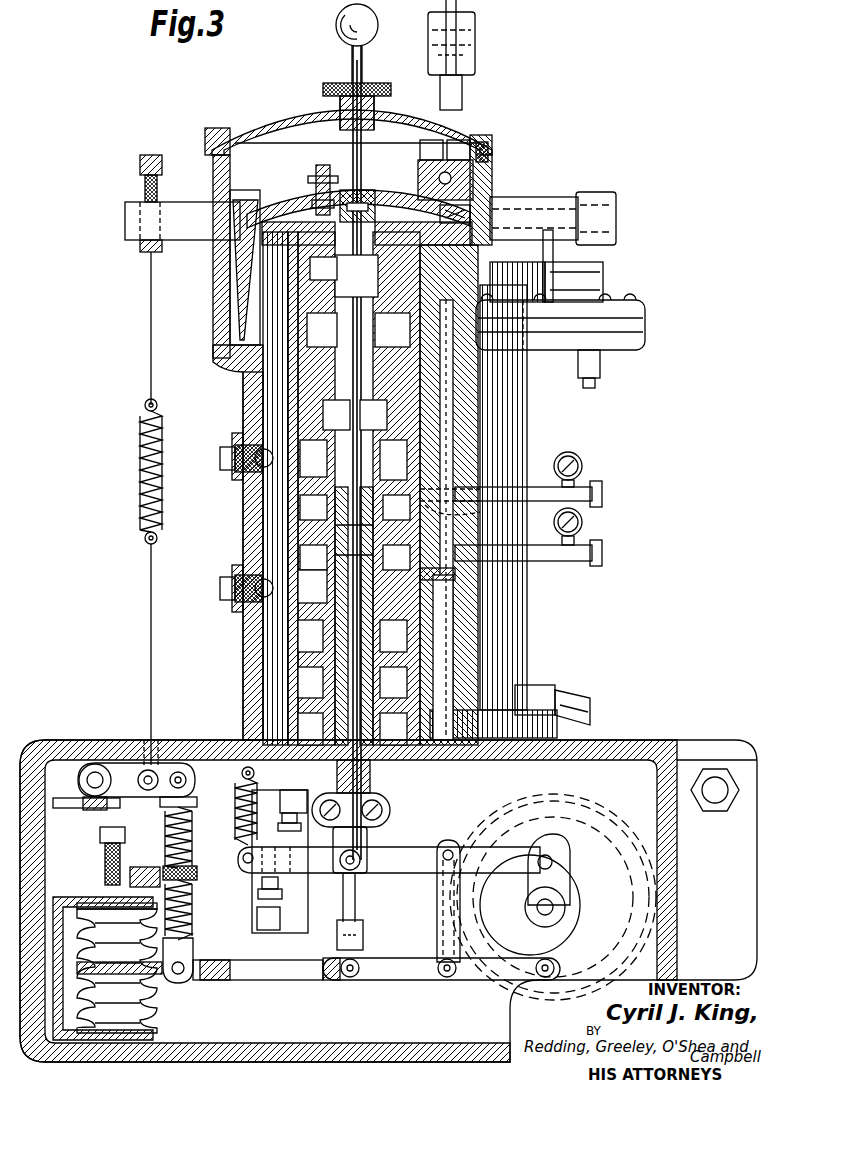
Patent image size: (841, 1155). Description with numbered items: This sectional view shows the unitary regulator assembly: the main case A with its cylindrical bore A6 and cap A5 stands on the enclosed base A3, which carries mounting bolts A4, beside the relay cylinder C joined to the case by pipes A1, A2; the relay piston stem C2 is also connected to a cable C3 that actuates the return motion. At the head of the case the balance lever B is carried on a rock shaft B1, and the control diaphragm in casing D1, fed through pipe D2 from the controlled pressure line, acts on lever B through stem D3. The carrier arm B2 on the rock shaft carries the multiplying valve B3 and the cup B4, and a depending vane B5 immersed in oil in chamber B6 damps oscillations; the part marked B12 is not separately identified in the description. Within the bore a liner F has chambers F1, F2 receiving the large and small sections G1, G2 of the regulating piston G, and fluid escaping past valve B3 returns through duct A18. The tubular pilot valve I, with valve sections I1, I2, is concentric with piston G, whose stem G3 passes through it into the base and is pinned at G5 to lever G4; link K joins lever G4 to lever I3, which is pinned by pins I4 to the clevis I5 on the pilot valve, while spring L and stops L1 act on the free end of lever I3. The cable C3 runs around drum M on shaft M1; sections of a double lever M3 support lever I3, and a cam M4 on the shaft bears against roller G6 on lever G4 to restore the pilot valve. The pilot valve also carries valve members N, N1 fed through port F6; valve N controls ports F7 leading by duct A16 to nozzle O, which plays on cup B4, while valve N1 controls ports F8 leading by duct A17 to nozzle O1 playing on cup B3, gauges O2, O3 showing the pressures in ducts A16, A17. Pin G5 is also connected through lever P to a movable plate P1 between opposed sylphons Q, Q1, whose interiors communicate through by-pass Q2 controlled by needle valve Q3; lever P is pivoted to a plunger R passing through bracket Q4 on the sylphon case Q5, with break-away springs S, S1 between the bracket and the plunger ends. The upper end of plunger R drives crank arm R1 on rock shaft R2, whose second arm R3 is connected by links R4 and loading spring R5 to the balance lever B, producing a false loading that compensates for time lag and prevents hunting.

The main case A is at (246, 675).
The pipe A1 is at (602, 268).
The pipe A2 is at (576, 715).
The enclosed base A3 is at (378, 1062).
The lugs and bolts A4 is at (715, 788).
The cap A5 is at (283, 130).
The cylindrical bore A6 is at (290, 700).
The duct A16 is at (470, 580).
The duct A17 is at (496, 510).
The return duct A18 is at (272, 642).
The balance lever B is at (557, 214).
The rock shaft B1 is at (250, 222).
The carrier arm B2 is at (376, 206).
The multiplying valve B3 is at (318, 175).
The cup B4 is at (372, 212).
The depending vane B5 is at (244, 292).
The chamber B6 is at (230, 326).
The diaphragm B12 is at (300, 200).
The cylinder C is at (516, 422).
The stem C2 is at (460, 108).
The cable C3 is at (453, 652).
The casing D1 is at (614, 338).
The pipe D2 is at (600, 378).
The stem D3 is at (556, 258).
The cylinder liner F is at (302, 416).
The chamber F1 is at (392, 330).
The chamber F2 is at (373, 415).
The port F6 is at (332, 528).
The ports F7 is at (332, 556).
The ports F8 is at (332, 500).
The regulating piston G is at (322, 330).
The upper piston section G1 is at (355, 276).
The lower piston section G2 is at (336, 415).
The stem G3 is at (360, 905).
The lever G4 is at (410, 980).
The pivotal connection G5 is at (350, 980).
The roller G6 is at (528, 988).
The pilot valve I is at (370, 778).
The valve section I1 is at (393, 636).
The valve section I2 is at (393, 729).
The lever I3 is at (418, 858).
The pins I4 is at (345, 862).
The clevis I5 is at (372, 832).
The link K is at (437, 932).
The spring L is at (248, 838).
The stops L1 is at (285, 815).
The drum M is at (612, 826).
The shaft M1 is at (560, 916).
The double lever M3 is at (553, 864).
The cam M4 is at (567, 906).
The valve member N is at (273, 586).
The valve member N1 is at (273, 458).
The nozzle O is at (488, 201).
The nozzle O1 is at (482, 180).
The gauge O2 is at (584, 526).
The gauge O3 is at (584, 470).
The lever P is at (270, 980).
The movable plate P1 is at (140, 986).
The sylphon Q is at (150, 1030).
The sylphon Q1 is at (84, 900).
The by-pass Q2 is at (64, 888).
The needle valve Q3 is at (120, 806).
The bracket Q4 is at (197, 873).
The case Q5 is at (148, 868).
The plunger R is at (190, 800).
The crank arm R1 is at (180, 770).
The rock shaft R2 is at (92, 772).
The second arm R3 is at (144, 772).
The links R4 is at (150, 370).
The loading spring R5 is at (147, 472).
The break-away spring S is at (186, 916).
The break-away spring S1 is at (190, 820).